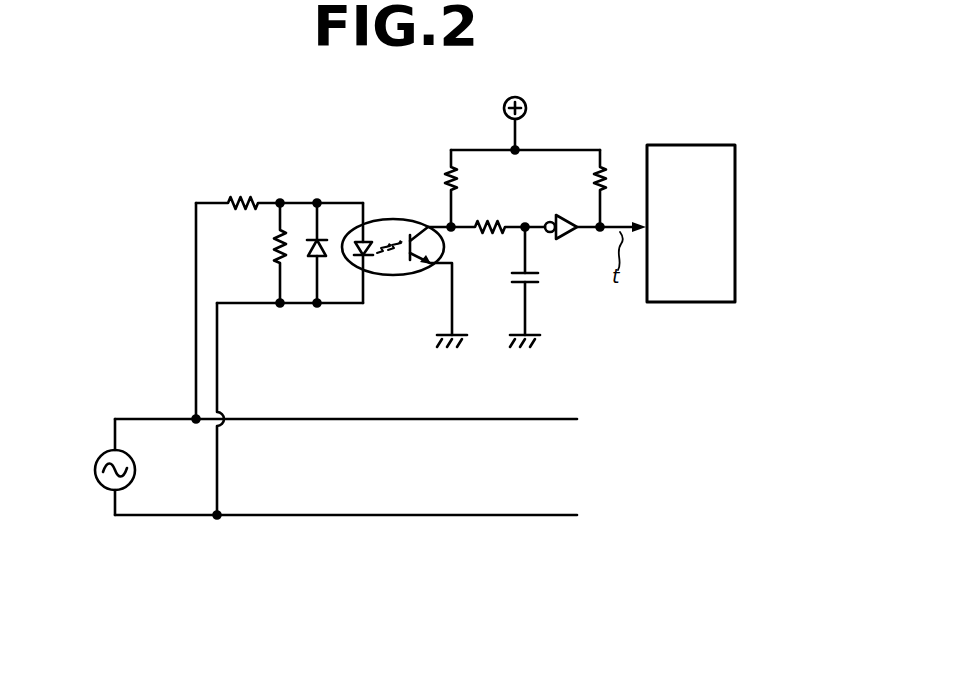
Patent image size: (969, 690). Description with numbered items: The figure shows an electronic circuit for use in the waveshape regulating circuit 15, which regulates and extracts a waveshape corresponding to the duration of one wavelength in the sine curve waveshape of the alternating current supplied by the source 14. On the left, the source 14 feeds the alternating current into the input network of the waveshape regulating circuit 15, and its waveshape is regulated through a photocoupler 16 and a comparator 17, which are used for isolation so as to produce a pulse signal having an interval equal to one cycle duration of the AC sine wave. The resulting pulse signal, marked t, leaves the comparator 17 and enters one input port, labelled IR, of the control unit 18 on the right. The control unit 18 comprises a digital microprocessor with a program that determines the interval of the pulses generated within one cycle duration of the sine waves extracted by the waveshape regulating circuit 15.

The source 14 is at (96, 457).
The waveshape regulating circuit 15 is at (335, 180).
The photocoupler 16 is at (400, 218).
The comparator 17 is at (573, 233).
The control unit 18 is at (692, 303).